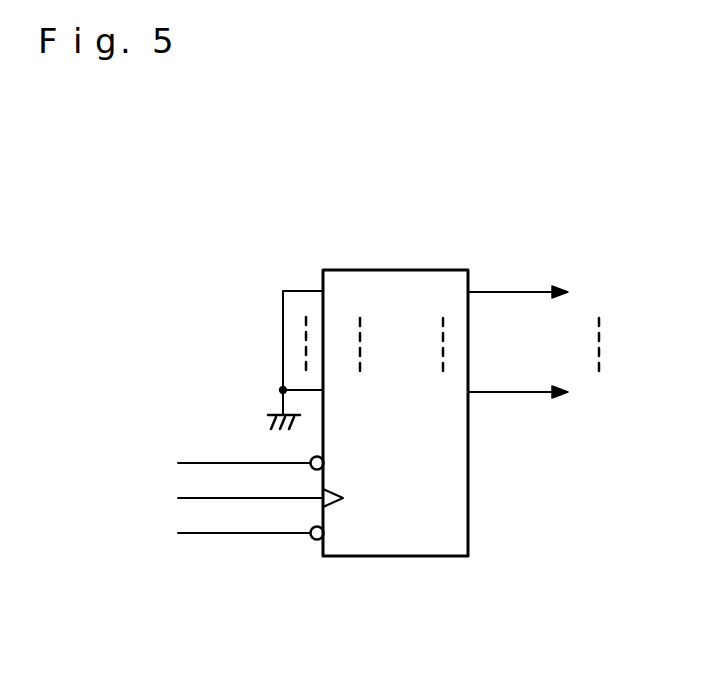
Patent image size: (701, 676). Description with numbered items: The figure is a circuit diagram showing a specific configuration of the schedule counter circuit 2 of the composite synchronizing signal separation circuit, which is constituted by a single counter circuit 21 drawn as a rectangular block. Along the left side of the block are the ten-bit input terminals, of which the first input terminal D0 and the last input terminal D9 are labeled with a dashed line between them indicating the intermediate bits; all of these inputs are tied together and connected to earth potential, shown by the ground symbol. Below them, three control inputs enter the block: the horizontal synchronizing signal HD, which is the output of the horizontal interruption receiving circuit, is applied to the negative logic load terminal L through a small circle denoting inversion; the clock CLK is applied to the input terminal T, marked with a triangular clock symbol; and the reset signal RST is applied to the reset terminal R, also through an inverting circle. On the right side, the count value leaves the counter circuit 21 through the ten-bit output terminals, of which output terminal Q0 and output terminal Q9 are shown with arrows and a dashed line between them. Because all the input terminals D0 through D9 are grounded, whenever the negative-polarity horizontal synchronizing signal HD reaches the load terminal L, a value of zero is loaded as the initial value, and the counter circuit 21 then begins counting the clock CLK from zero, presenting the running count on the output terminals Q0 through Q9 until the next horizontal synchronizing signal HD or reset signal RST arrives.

The schedule counter circuit 2 is at (470, 213).
The counter circuit 21 is at (447, 556).
The horizontal synchronizing signal HD is at (166, 459).
The clock CLK is at (166, 494).
The reset signal RST is at (166, 529).
The input terminal D0 is at (327, 349).
The input terminal D9 is at (327, 399).
The output terminal Q0 is at (516, 299).
The output terminal Q9 is at (516, 397).